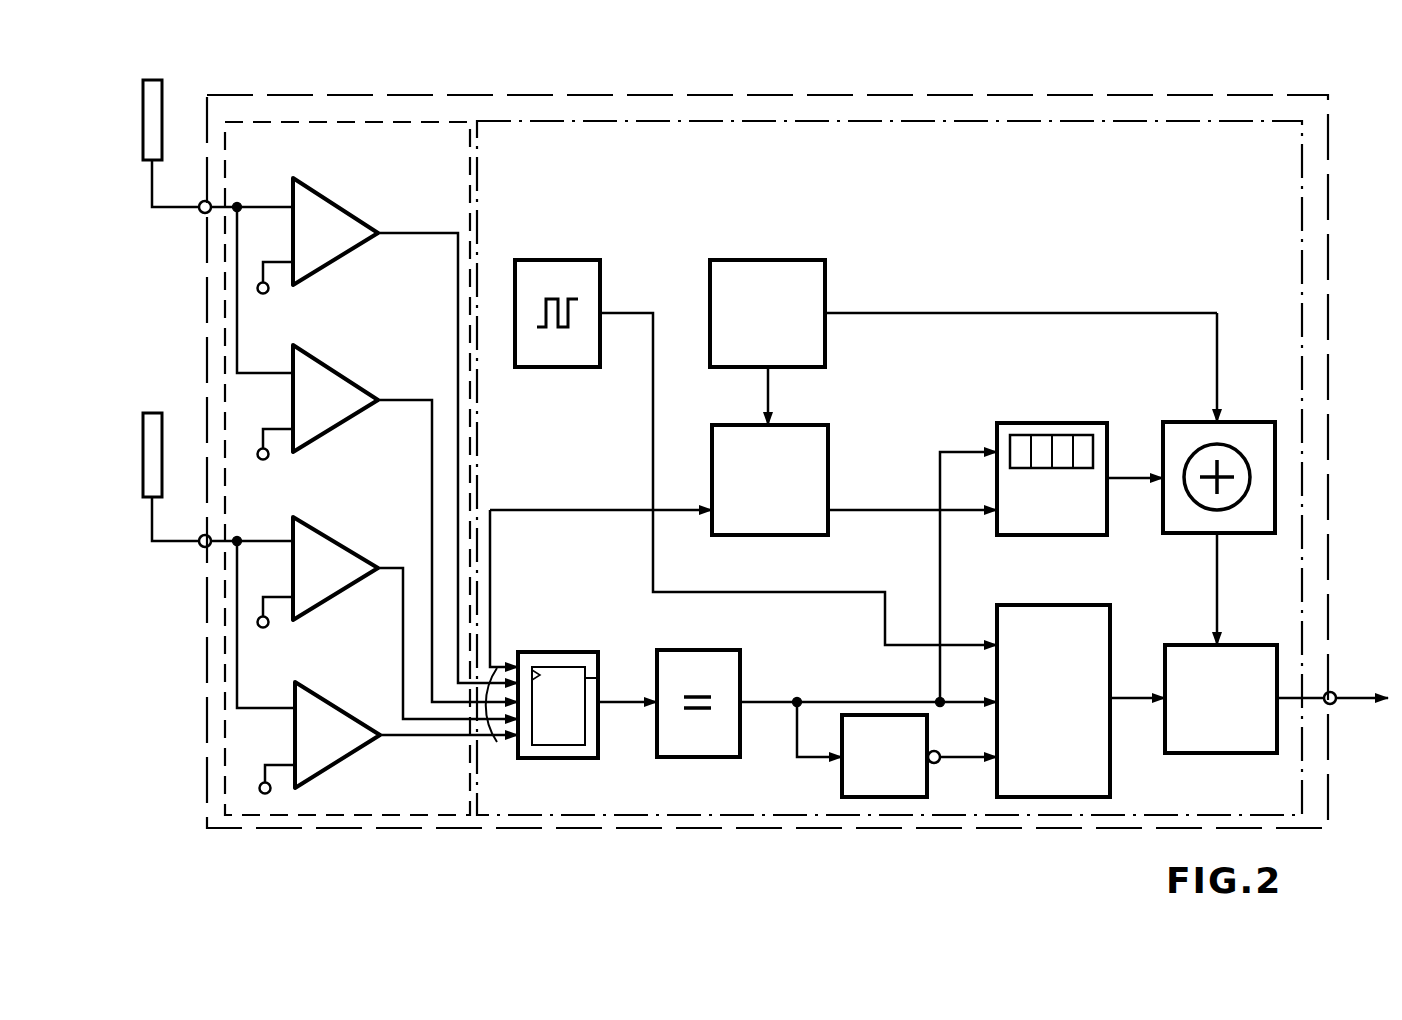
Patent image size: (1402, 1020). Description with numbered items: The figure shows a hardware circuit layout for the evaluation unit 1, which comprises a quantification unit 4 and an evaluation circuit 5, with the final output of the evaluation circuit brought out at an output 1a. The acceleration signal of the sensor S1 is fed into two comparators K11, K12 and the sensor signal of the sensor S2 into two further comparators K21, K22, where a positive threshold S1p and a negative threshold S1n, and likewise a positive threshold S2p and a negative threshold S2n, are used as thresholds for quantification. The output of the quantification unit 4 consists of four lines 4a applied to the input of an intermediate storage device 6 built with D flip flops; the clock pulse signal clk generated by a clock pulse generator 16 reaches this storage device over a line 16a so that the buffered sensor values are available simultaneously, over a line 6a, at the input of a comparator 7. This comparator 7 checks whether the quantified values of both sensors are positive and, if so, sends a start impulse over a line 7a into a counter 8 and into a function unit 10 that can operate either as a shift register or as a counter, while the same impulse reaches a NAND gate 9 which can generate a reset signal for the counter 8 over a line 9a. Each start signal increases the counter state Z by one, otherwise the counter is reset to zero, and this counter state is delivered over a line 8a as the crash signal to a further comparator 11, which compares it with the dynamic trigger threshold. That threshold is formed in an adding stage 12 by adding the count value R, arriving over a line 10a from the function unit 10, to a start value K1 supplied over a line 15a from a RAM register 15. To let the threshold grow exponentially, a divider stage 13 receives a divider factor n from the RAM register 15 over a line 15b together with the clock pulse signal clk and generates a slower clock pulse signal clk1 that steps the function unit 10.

The evaluation unit 1 is at (708, 830).
The output 1a is at (1350, 696).
The quantification unit 4 is at (430, 803).
The lines 4a is at (497, 742).
The evaluation circuit 5 is at (594, 803).
The intermediate storage device 6 is at (562, 652).
The line 6a is at (622, 700).
The comparator 7 is at (736, 648).
The line 7a is at (944, 566).
The counter 8 is at (1052, 605).
The line 8a is at (1128, 706).
The NAND gate 9 is at (838, 787).
The line 9a is at (966, 762).
The function unit 10 is at (1050, 423).
The line 10a is at (1128, 492).
The further comparator 11 is at (1180, 643).
The adding stage 12 is at (1186, 422).
The divider stage 13 is at (832, 452).
The RAM register 15 is at (792, 259).
The line 15a is at (958, 310).
The line 15b is at (772, 390).
The clock pulse generator 16 is at (562, 260).
The line 16a is at (656, 304).
The sensor S1 is at (140, 113).
The sensor S2 is at (140, 446).
The comparator K11 is at (348, 208).
The comparator K12 is at (340, 374).
The comparator K21 is at (338, 546).
The comparator K22 is at (348, 710).
The positive threshold S1p is at (268, 293).
The negative threshold S1n is at (268, 459).
The positive threshold S2p is at (268, 627).
The negative threshold S2n is at (270, 793).
The start value K1 is at (1235, 367).